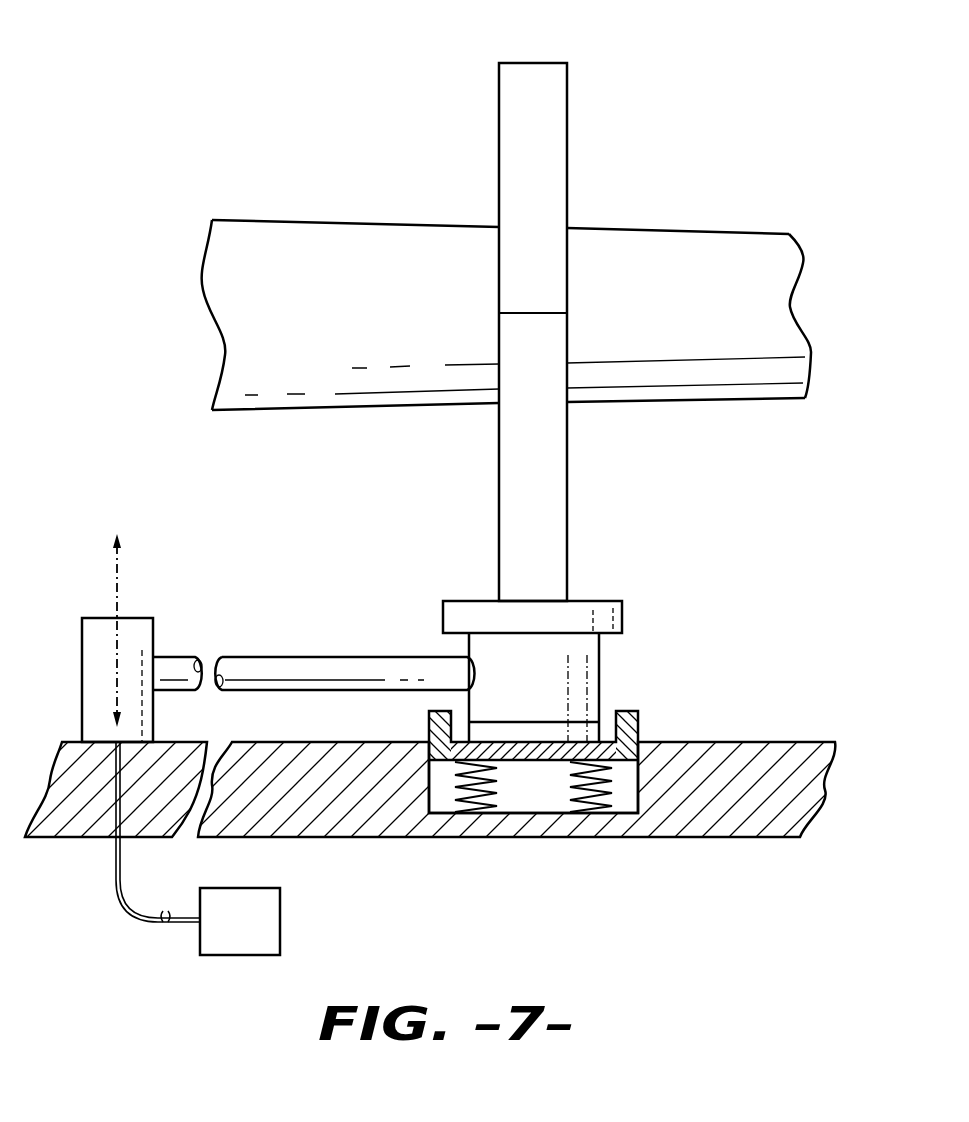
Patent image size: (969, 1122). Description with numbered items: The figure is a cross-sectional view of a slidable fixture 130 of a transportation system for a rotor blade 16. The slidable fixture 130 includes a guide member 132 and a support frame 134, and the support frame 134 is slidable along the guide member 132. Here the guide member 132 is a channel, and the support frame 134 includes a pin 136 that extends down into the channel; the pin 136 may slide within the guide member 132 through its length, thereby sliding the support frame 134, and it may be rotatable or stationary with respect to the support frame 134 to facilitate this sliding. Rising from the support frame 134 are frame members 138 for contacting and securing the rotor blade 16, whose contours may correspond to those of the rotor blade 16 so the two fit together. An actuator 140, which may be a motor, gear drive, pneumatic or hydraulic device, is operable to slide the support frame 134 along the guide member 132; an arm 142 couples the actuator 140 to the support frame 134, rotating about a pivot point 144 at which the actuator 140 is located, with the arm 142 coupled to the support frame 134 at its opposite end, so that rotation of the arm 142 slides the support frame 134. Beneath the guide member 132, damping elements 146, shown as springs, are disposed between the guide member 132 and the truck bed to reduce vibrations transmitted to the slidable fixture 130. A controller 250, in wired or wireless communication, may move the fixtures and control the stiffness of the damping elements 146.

The slidable fixture 130 is at (305, 92).
The rotor blade 16 is at (670, 216).
The frame members 138 is at (548, 133).
The support frame 134 is at (642, 602).
The pin 136 is at (580, 651).
The guide member 132 is at (608, 710).
The damping elements 146 is at (507, 798).
The actuator 140 is at (135, 615).
The arm 142 is at (273, 665).
The pivot point 144 is at (117, 583).
The controller 250 is at (215, 938).